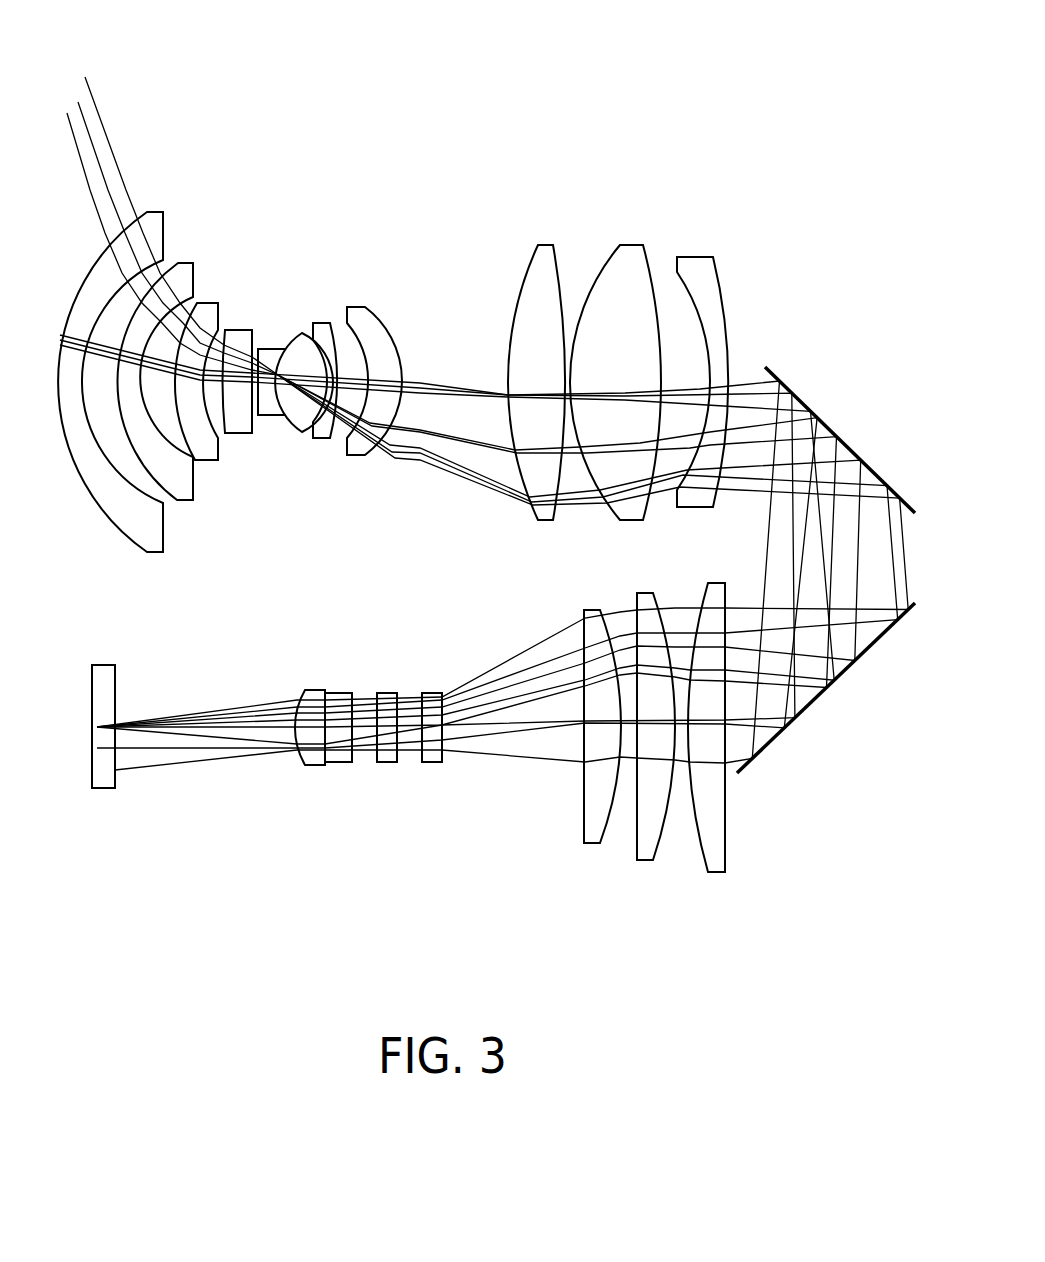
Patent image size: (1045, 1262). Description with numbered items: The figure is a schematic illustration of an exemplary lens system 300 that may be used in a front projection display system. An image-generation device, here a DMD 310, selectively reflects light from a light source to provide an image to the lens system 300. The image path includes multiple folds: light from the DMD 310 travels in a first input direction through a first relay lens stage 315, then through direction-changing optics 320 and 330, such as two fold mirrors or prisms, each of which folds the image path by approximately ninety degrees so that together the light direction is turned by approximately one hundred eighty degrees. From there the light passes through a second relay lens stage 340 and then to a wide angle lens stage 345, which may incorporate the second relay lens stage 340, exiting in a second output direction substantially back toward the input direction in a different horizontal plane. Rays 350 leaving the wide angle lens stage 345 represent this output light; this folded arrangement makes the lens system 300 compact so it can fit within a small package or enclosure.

The lens system 300 is at (498, 98).
The DMD 310 is at (101, 785).
The first relay lens stage 315 is at (730, 882).
The direction-changing element 320 is at (772, 742).
The direction-changing element 330 is at (835, 433).
The second relay lens stage 340 is at (728, 221).
The wide angle lens stage 345 is at (385, 203).
The incoming light rays 350 is at (107, 140).